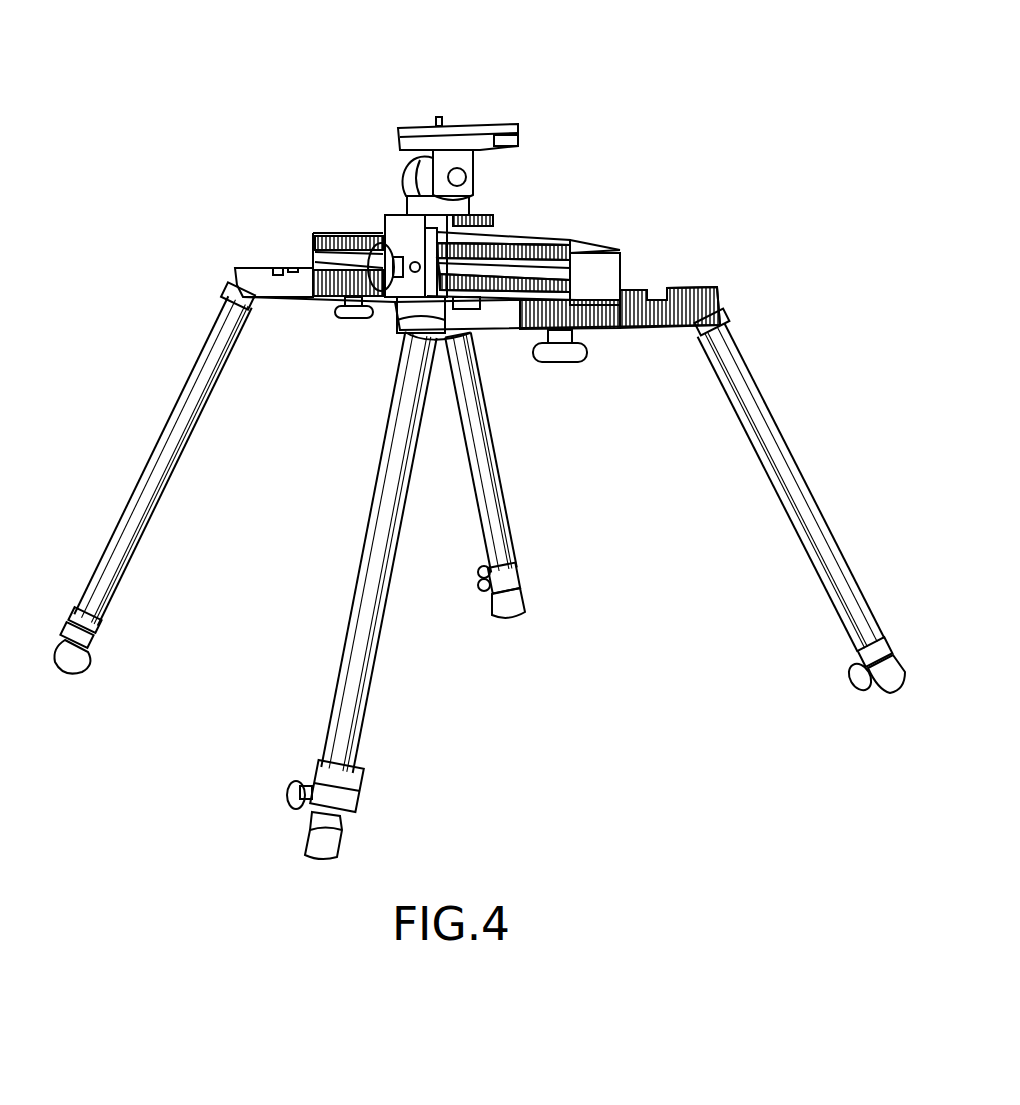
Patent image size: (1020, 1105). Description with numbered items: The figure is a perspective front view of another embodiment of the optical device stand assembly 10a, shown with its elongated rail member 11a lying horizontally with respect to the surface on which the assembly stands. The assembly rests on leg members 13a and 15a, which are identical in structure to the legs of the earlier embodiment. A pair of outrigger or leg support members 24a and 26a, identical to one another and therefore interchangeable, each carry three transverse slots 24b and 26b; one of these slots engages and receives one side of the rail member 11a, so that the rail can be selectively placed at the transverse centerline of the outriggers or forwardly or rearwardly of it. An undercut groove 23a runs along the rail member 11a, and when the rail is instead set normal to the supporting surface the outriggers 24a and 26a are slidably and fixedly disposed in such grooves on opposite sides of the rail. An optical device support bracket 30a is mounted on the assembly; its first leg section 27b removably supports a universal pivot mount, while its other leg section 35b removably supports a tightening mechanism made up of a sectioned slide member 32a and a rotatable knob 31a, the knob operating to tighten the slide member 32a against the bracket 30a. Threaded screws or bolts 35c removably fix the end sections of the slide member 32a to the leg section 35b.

The optical device stand assembly 10a is at (479, 429).
The elongated rail member 11a is at (600, 255).
The leg member 13a is at (750, 373).
The leg member 15a is at (183, 397).
The undercut groove 23a is at (561, 287).
The outrigger member 24a is at (568, 319).
The transverse slot 24b is at (660, 298).
The outrigger member 26a is at (261, 244).
The transverse slot 26b is at (283, 267).
The first leg section 27b is at (505, 212).
The optical device support bracket 30a is at (413, 370).
The rotatable knob 31a is at (375, 263).
The sectioned slide member 32a is at (447, 267).
The leg section 35b is at (403, 232).
The threaded screws or bolts 35c is at (430, 297).